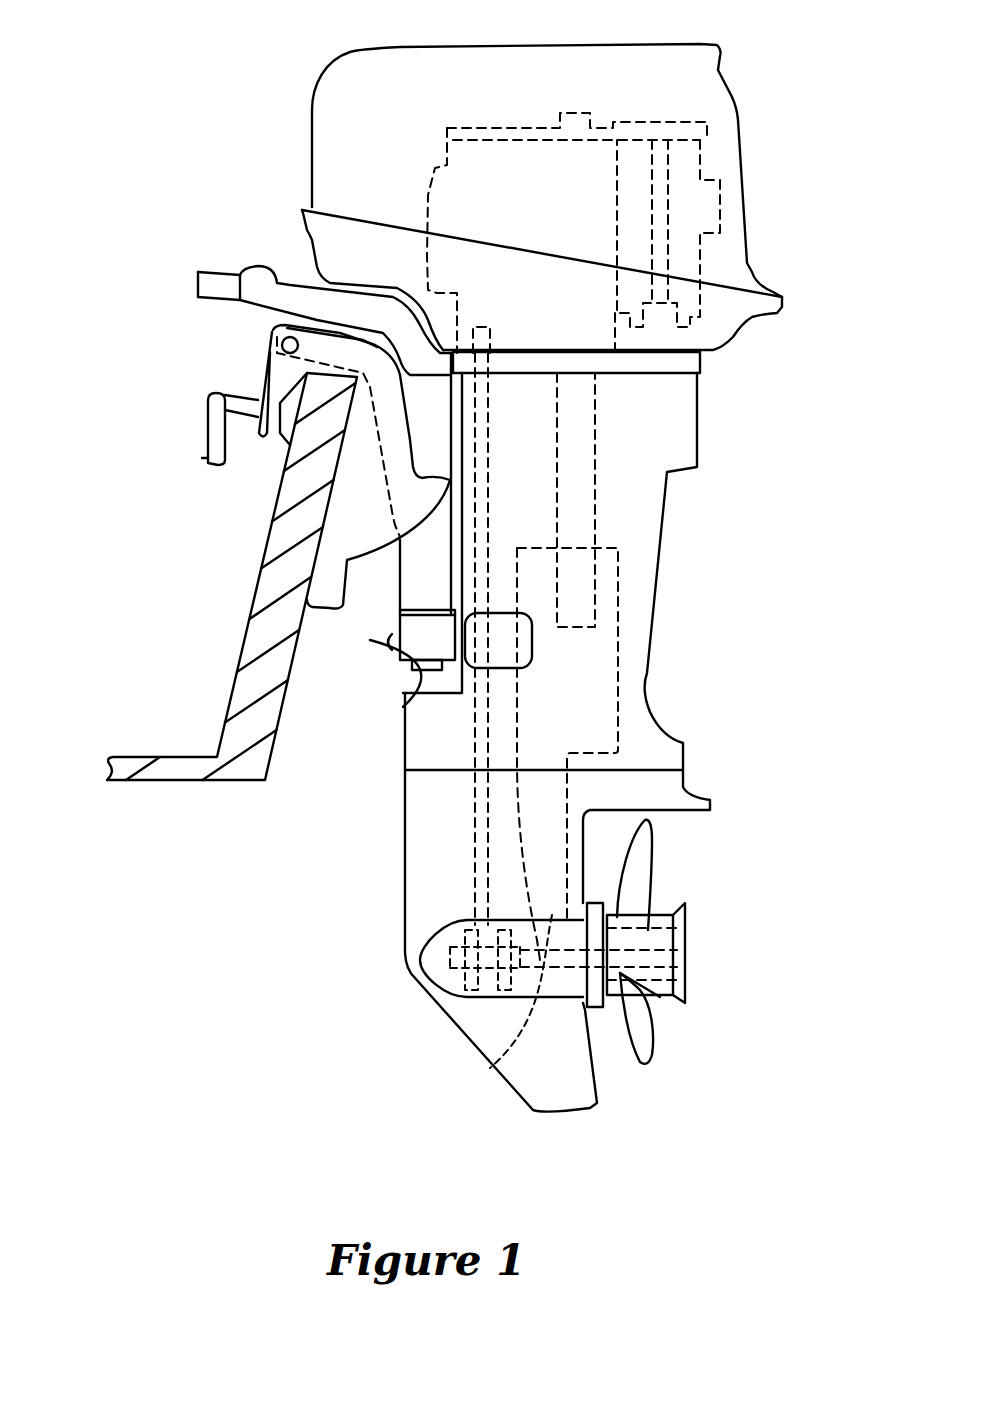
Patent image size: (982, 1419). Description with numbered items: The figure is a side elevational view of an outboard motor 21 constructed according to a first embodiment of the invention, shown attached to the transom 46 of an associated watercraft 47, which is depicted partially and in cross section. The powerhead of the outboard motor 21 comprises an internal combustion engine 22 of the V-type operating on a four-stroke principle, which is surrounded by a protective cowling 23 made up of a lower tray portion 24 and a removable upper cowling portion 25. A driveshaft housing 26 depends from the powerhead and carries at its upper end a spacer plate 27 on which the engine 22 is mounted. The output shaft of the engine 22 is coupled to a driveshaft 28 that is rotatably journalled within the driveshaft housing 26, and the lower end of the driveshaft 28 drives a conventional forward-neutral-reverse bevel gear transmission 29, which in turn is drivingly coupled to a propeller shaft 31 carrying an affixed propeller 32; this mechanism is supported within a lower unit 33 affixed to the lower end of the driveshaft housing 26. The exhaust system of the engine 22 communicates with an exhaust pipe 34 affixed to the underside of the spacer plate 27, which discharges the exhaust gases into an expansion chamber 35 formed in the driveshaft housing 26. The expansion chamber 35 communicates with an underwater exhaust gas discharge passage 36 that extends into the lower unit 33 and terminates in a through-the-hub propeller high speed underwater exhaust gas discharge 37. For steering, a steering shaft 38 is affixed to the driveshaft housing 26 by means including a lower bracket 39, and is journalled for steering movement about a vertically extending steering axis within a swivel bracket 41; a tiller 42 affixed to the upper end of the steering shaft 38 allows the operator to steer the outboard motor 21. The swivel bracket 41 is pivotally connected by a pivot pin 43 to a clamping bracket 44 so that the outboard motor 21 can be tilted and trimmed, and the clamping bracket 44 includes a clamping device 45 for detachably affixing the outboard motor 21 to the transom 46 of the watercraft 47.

The outboard motor 21 is at (572, 175).
The internal combustion engine 22 is at (667, 107).
The protective cowling 23 is at (757, 166).
The lower tray portion 24 is at (783, 294).
The upper cowling portion 25 is at (747, 227).
The driveshaft housing 26 is at (697, 431).
The spacer plate 27 is at (703, 363).
The driveshaft 28 is at (473, 852).
The bevel gear transmission 29 is at (440, 978).
The propeller shaft 31 is at (490, 1068).
The propeller 32 is at (653, 1030).
The lower unit 33 is at (697, 797).
The exhaust pipe 34 is at (595, 482).
The expansion chamber 35 is at (603, 660).
The underwater exhaust gas discharge passage 36 is at (560, 842).
The through-the-hub propeller exhaust gas discharge 37 is at (688, 941).
The steering shaft 38 is at (415, 670).
The lower bracket 39 is at (395, 642).
The swivel bracket 41 is at (420, 585).
The tiller 42 is at (220, 270).
The pivot pin 43 is at (280, 345).
The clamping bracket 44 is at (340, 523).
The clamping device 45 is at (208, 410).
The transom 46 is at (233, 633).
The watercraft 47 is at (130, 796).